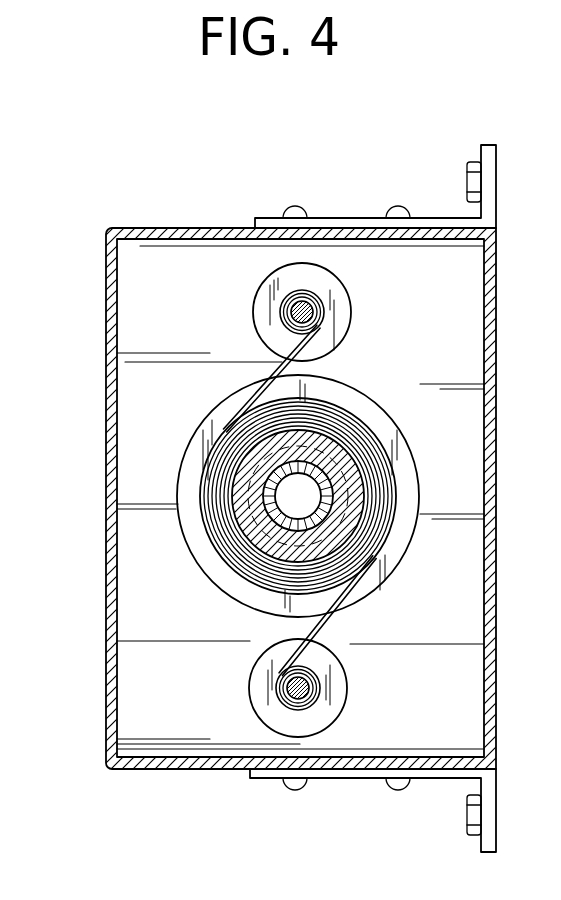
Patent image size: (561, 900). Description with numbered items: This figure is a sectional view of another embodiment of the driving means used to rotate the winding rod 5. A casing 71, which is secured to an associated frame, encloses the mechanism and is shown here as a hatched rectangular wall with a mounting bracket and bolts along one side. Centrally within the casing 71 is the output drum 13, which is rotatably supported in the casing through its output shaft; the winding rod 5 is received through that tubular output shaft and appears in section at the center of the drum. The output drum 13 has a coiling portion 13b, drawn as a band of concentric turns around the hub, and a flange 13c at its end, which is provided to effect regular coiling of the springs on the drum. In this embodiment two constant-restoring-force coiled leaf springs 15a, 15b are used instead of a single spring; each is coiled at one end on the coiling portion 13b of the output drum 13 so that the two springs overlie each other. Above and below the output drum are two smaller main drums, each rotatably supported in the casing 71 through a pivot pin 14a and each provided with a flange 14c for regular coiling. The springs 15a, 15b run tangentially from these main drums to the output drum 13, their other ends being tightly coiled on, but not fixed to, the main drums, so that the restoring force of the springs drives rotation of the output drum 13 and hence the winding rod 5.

The casing 71 is at (107, 312).
The flange 14c is at (260, 302).
The pivot pin 14a is at (320, 303).
The constant-restoring-force coiled leaf spring 15a is at (273, 360).
The constant-restoring-force coiled leaf spring 15b is at (323, 630).
The flange 13c is at (370, 398).
The coiling portion 13b is at (373, 485).
The output drum 13 is at (357, 500).
The winding rod 5 is at (327, 522).